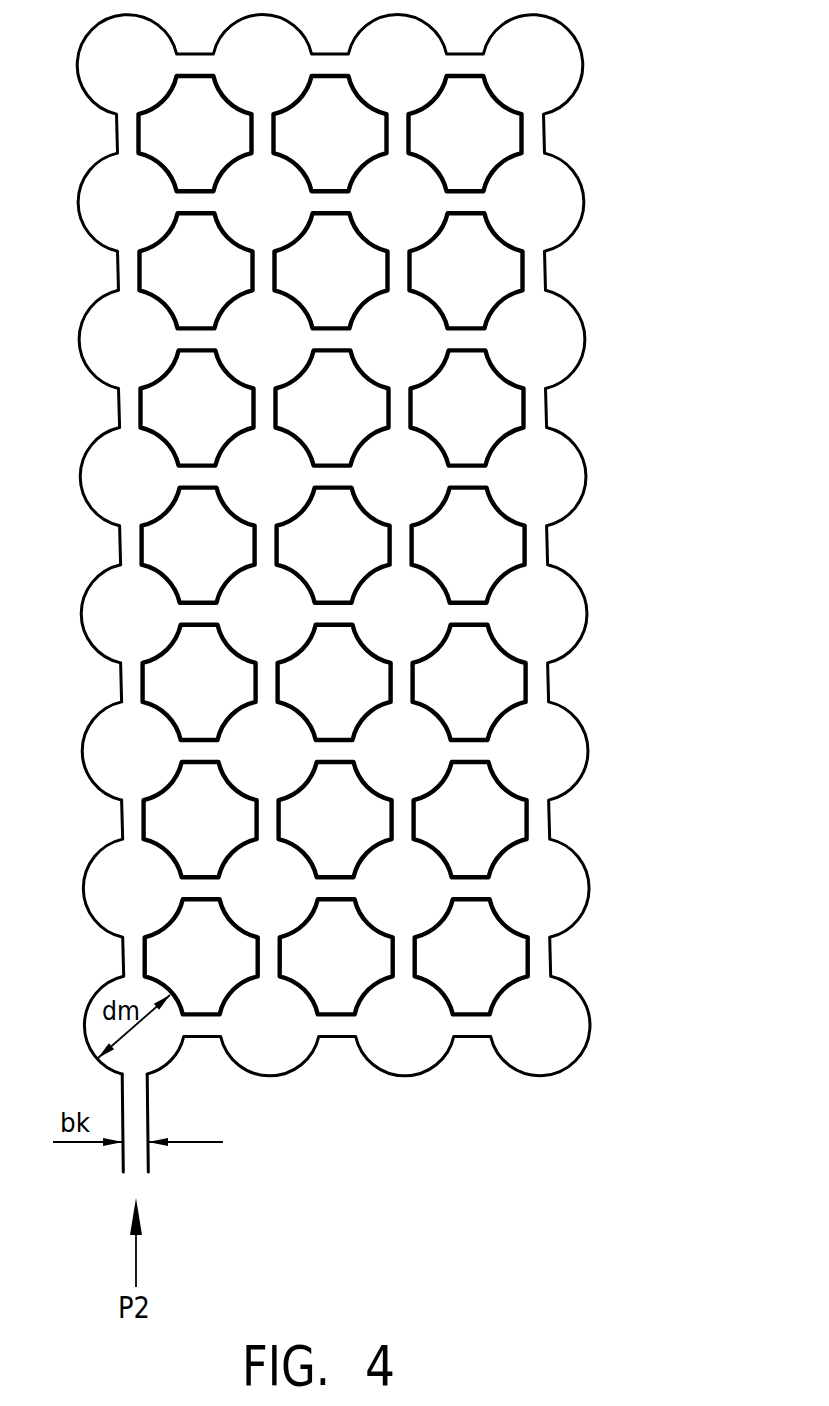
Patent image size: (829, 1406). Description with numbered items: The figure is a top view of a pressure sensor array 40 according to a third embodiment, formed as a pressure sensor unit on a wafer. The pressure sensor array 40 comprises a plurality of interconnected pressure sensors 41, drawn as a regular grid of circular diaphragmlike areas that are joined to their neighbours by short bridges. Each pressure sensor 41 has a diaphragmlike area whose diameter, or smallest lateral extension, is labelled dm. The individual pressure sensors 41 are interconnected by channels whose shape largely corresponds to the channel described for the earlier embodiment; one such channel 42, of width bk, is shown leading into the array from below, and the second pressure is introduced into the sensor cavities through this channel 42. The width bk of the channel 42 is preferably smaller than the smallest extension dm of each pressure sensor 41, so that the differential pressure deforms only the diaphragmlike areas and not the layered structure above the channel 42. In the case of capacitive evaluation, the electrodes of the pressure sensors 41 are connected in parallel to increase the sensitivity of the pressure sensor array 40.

The pressure sensor array 40 is at (690, 658).
The pressure sensor 41 is at (117, 635).
The channel 42 is at (135, 1147).